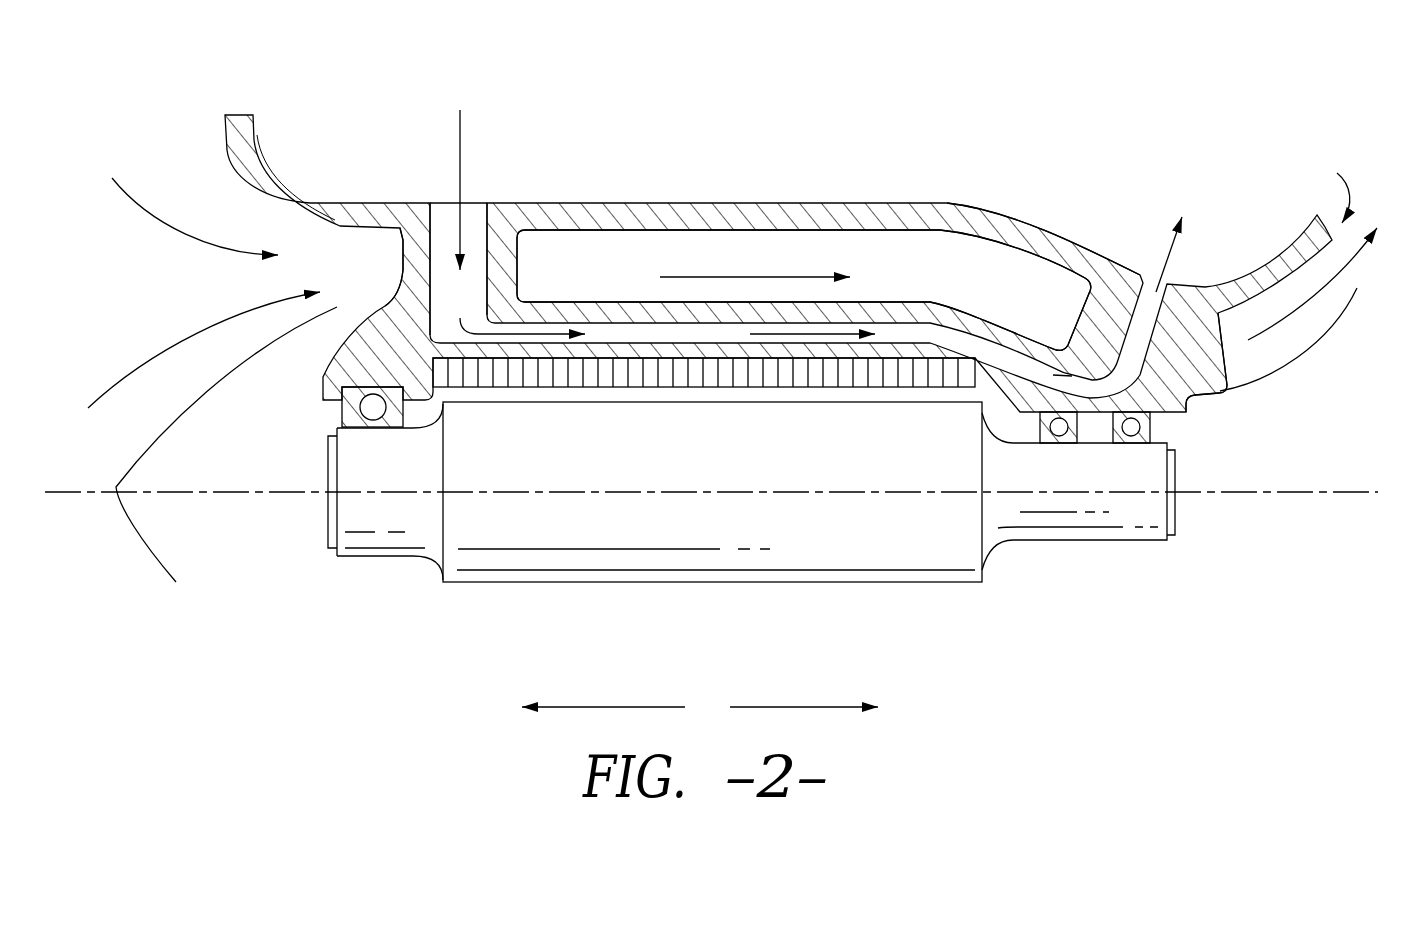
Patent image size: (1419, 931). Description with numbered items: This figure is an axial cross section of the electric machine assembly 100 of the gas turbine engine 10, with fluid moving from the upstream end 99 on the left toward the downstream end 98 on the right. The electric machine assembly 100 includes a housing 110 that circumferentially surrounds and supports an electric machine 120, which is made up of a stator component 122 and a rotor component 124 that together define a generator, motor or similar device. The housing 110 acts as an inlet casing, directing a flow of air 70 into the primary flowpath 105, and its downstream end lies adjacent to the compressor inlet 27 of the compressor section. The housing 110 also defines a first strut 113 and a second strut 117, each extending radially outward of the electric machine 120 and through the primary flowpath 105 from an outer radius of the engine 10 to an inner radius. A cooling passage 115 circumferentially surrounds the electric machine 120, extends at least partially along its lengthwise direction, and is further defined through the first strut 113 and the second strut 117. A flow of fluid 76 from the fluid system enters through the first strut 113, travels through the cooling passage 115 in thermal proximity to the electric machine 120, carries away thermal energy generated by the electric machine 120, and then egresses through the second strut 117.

The gas turbine engine 10 is at (1080, 153).
The compressor inlet 27 is at (1326, 184).
The flow of air 70 is at (178, 340).
The flow of fluid 76 is at (465, 158).
The downstream end 98 is at (1418, 296).
The upstream end 99 is at (91, 279).
The electric machine assembly 100 is at (525, 610).
The primary flowpath 105 is at (597, 281).
The housing 110 is at (723, 210).
The first strut 113 is at (396, 282).
The cooling passage 115 is at (486, 303).
The second strut 117 is at (1197, 362).
The electric machine 120 is at (712, 592).
The stator component 122 is at (728, 377).
The rotor component 124 is at (628, 458).